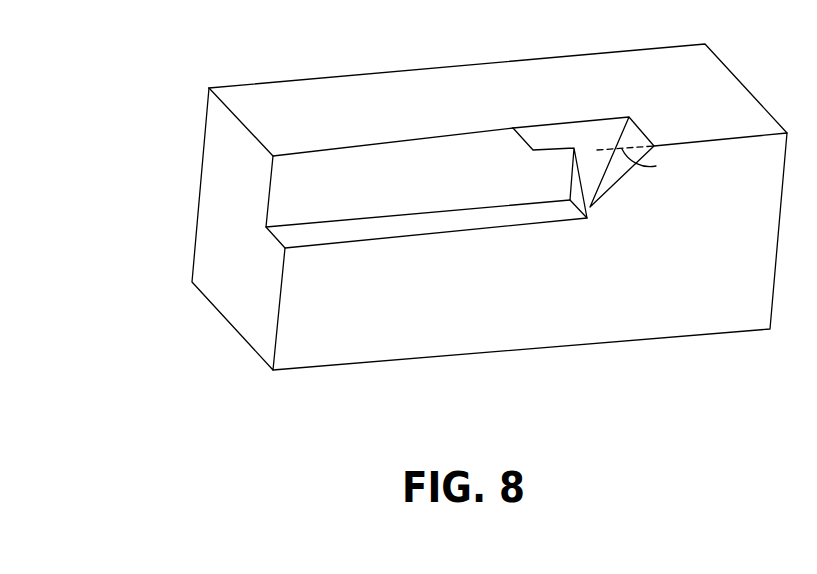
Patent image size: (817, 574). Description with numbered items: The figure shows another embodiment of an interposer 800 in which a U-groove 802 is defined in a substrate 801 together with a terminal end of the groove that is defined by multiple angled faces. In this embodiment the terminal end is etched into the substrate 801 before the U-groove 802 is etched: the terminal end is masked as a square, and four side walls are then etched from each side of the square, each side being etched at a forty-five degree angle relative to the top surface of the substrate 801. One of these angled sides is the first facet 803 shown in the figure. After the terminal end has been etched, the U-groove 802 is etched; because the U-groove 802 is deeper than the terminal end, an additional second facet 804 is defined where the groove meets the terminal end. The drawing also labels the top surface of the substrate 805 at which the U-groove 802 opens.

The interposer 800 is at (167, 73).
The substrate 801 is at (220, 173).
The U-groove 802 is at (292, 236).
The first facet 803 is at (610, 173).
The second facet 804 is at (578, 187).
The top surface of block 805 is at (303, 100).